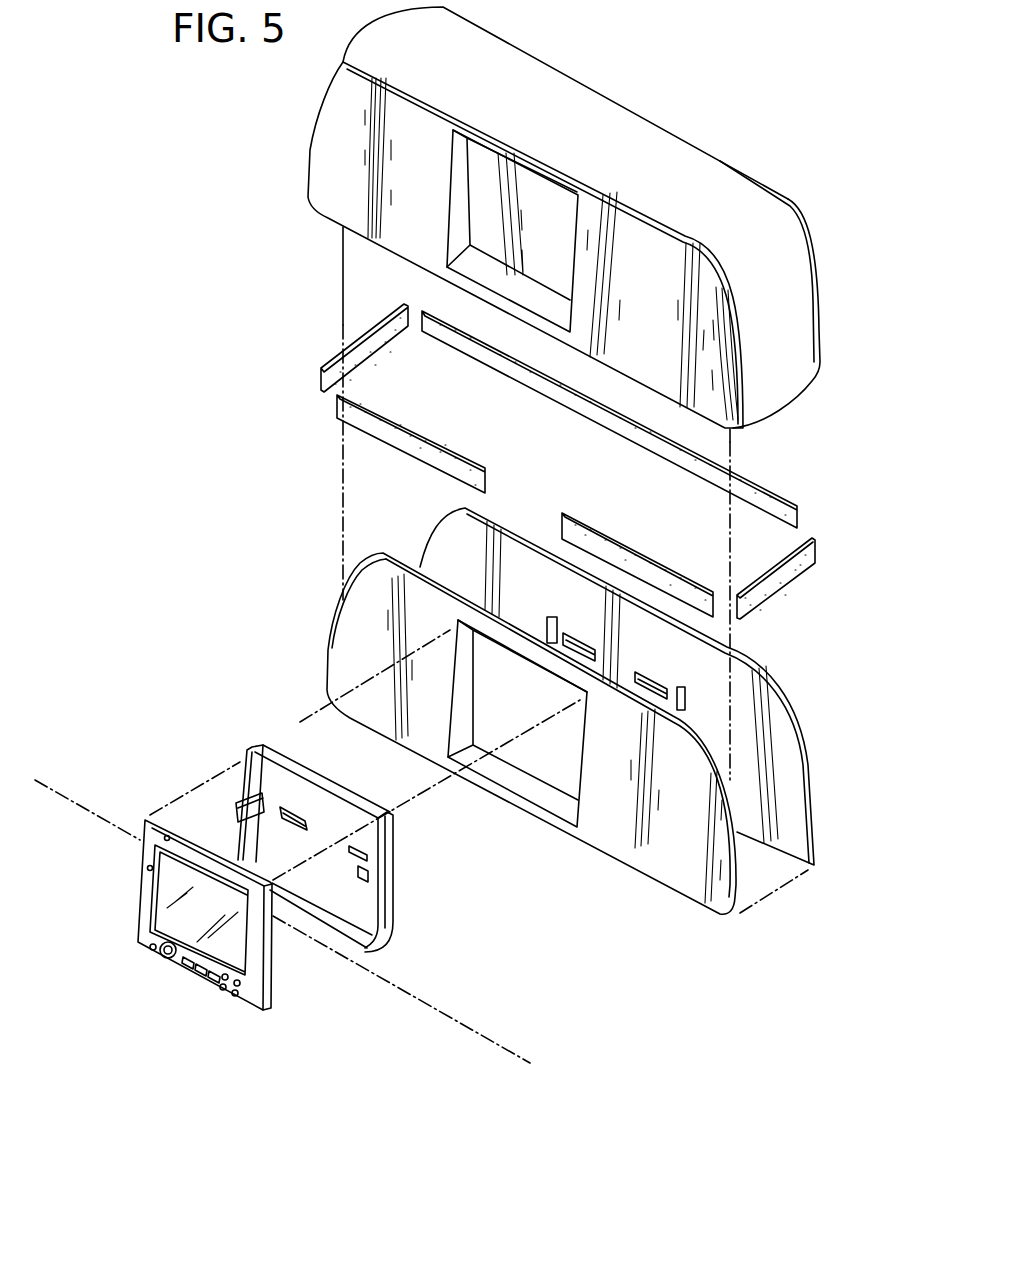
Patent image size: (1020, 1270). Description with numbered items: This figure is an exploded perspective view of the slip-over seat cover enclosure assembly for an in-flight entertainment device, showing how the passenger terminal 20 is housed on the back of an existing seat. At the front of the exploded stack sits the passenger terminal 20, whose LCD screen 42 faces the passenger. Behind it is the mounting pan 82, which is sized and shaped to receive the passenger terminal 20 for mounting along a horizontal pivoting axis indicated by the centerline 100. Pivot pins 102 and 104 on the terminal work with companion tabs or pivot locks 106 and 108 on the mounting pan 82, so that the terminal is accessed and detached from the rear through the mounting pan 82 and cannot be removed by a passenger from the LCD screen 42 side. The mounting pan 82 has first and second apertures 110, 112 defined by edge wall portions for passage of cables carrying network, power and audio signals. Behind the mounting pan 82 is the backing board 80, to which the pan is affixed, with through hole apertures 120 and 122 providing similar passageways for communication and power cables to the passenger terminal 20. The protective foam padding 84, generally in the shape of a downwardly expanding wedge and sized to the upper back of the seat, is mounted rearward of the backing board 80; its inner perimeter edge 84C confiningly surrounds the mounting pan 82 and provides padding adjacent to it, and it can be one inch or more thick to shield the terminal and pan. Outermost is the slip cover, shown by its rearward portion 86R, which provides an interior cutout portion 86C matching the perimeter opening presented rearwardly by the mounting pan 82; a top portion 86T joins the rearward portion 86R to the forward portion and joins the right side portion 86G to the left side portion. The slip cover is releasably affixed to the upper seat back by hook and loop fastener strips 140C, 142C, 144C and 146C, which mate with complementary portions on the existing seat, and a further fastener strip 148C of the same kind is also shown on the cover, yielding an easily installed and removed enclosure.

The passenger terminal 20 is at (215, 986).
The LCD screen 42 is at (238, 946).
The backing board 80 is at (690, 858).
The mounting pan 82 is at (394, 860).
The protective foam padding 84 is at (345, 648).
The inner perimeter edge 84C is at (530, 781).
The rearward portion 86R is at (312, 150).
The top portion 86T is at (554, 114).
The interior cutout portion 86C is at (534, 182).
The right side portion 86G is at (773, 288).
The centerline 100 is at (475, 1034).
The pivot pin 102 is at (142, 840).
The pivot pin 104 is at (268, 917).
The pivot lock 106 is at (235, 812).
The pivot lock 108 is at (373, 877).
The first aperture 110 is at (292, 808).
The second aperture 112 is at (352, 863).
The through hole aperture 120 is at (577, 639).
The through hole aperture 122 is at (652, 678).
The hook and loop fastener strip 140C is at (602, 533).
The hook and loop fastener strip 142C is at (780, 581).
The hook and loop fastener strip 144C is at (570, 412).
The hook and loop fastener strip 146C is at (334, 361).
The cushion strip 148C is at (380, 404).